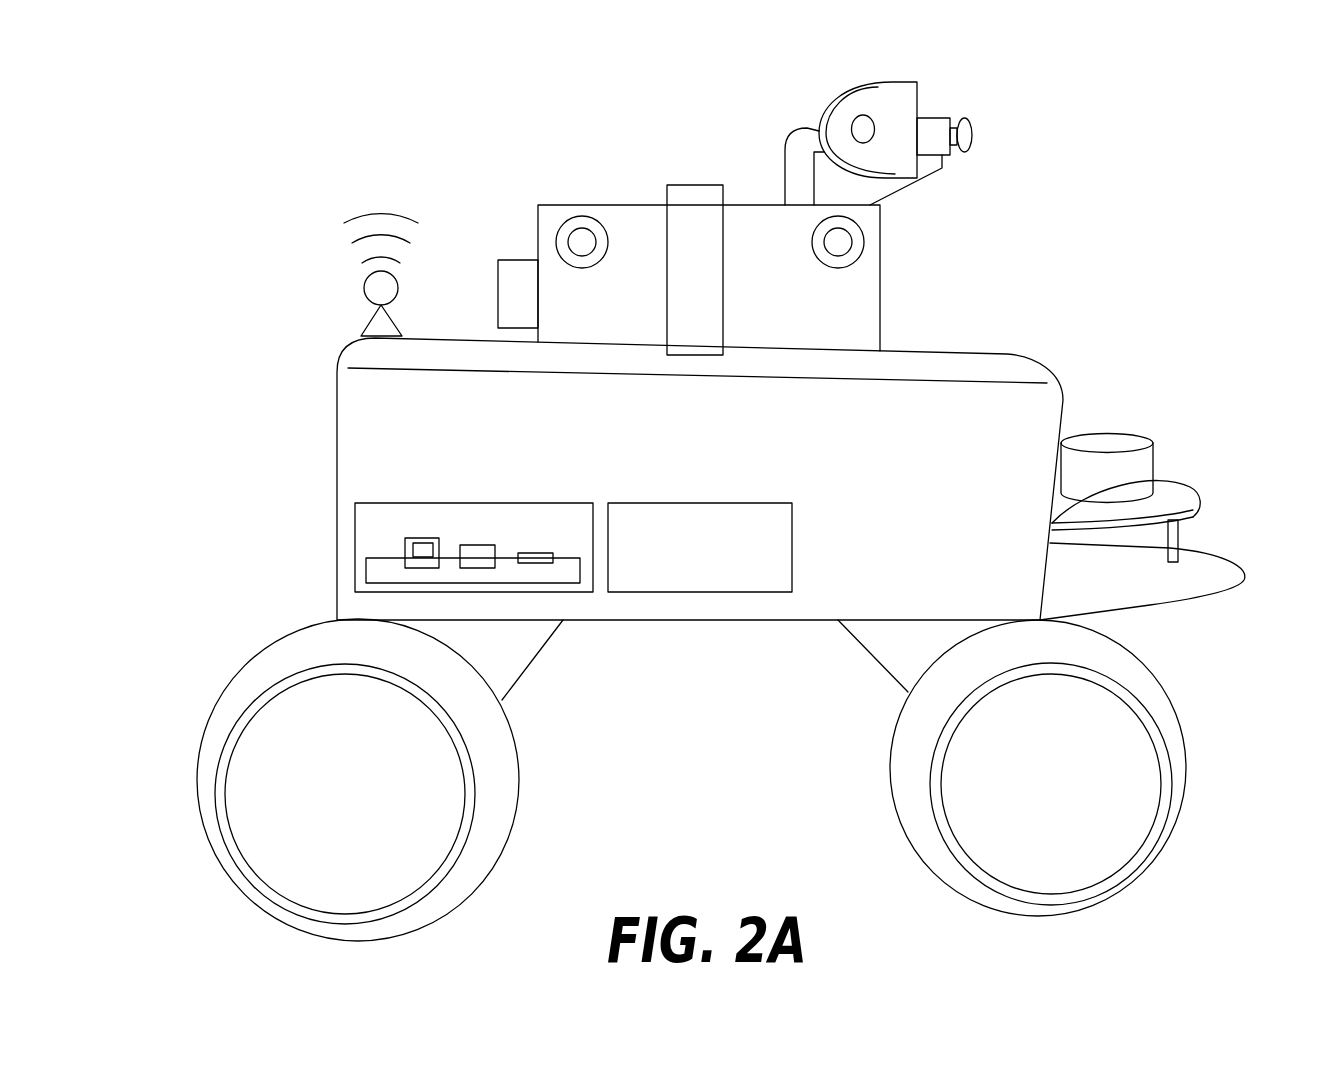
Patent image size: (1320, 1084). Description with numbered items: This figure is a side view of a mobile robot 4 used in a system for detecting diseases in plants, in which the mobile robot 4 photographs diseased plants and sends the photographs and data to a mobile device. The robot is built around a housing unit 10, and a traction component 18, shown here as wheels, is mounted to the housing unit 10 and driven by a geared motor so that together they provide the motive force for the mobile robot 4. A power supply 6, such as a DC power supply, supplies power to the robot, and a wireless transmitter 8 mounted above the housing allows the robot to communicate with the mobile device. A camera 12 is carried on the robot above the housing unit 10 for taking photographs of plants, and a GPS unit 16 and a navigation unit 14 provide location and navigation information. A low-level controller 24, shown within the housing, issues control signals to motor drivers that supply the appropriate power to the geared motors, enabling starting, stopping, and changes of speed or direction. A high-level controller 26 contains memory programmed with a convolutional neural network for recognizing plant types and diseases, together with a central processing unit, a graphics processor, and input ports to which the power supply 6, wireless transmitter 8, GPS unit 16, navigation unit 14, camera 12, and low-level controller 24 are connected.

The mobile robot 4 is at (210, 246).
The power supply 6 is at (652, 538).
The wireless transmitter 8 is at (367, 323).
The housing unit 10 is at (355, 416).
The camera 12 is at (935, 123).
The navigation unit 14 is at (1105, 465).
The GPS unit 16 is at (516, 268).
The traction component 18 is at (272, 728).
The low-level controller 24 is at (427, 520).
The high-level controller 26 is at (858, 298).